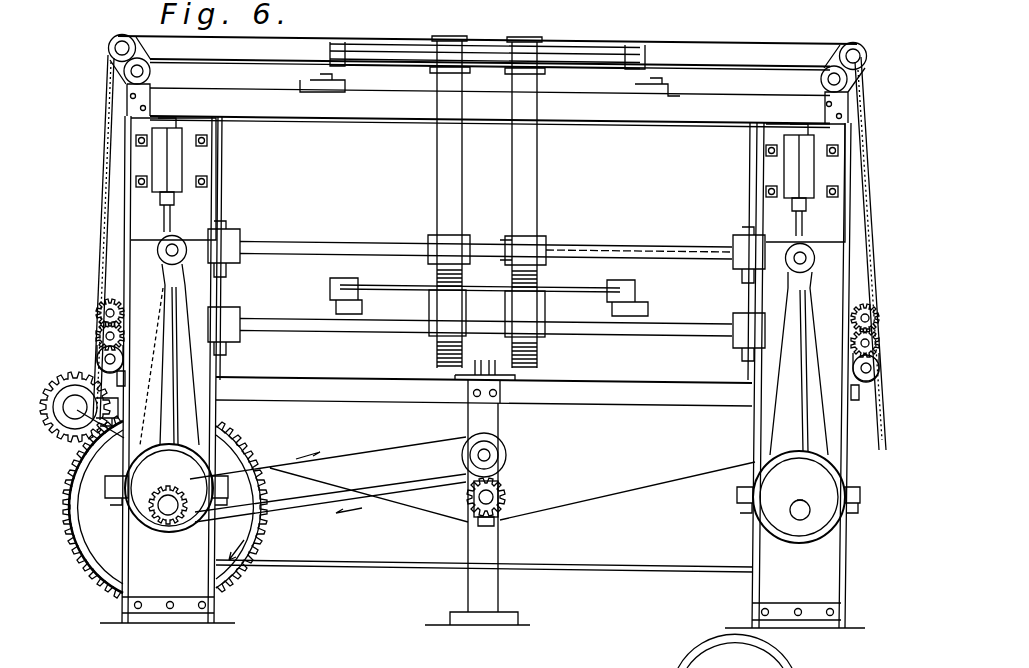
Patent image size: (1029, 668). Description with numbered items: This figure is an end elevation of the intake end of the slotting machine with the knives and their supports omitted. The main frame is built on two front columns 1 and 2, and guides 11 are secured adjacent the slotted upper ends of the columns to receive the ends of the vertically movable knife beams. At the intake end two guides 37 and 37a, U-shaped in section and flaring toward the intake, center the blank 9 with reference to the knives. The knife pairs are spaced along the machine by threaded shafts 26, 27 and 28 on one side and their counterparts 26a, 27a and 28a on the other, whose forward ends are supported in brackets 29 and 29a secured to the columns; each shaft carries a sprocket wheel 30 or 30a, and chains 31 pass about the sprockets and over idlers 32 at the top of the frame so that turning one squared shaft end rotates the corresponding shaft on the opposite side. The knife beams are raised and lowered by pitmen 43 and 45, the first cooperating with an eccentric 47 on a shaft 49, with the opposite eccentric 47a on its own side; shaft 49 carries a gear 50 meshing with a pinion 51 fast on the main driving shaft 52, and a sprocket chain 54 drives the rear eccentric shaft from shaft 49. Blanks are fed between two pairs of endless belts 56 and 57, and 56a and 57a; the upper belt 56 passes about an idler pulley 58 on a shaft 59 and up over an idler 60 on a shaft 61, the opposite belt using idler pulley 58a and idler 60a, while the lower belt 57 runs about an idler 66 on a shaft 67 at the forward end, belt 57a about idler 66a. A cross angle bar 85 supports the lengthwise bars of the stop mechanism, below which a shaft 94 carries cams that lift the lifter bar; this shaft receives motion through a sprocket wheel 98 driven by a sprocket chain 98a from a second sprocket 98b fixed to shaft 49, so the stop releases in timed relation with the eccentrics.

The front column 1 is at (168, 585).
The front column 2 is at (762, 588).
The blank 9 is at (577, 286).
The guides 11 is at (216, 190).
The shaft 26 is at (106, 310).
The shaft 26a is at (877, 302).
The shaft 27 is at (120, 330).
The shaft 27a is at (860, 346).
The shaft 28 is at (122, 358).
The shaft 28a is at (875, 373).
The bracket 29 is at (125, 378).
The bracket 29a is at (858, 400).
The sprocket wheel 30 is at (98, 336).
The sprocket wheel 30a is at (880, 356).
The chain 31 is at (102, 176).
The idler 32 is at (151, 70).
The guide 37 is at (335, 286).
The guide 37a is at (640, 294).
The pitman 43 is at (185, 362).
The pitman 45 is at (782, 420).
The eccentric 47 is at (139, 506).
The eccentric 47a is at (794, 522).
The shaft 49 is at (178, 516).
The gear 50 is at (252, 526).
The pinion 51 is at (70, 442).
The main driving shaft 52 is at (100, 456).
The sprocket chain 54 is at (380, 565).
The endless belt 56 is at (440, 135).
The endless belt 56a is at (523, 146).
The endless belt 57 is at (442, 325).
The endless belt 57a is at (545, 346).
The idler pulley 58 is at (437, 235).
The idler pulley 58a is at (537, 240).
The shaft 59 is at (617, 244).
The idler 60 is at (462, 38).
The idler 60a is at (537, 41).
The shaft 61 is at (585, 63).
The idler 66 is at (442, 343).
The idler 66a is at (540, 361).
The shaft 67 is at (680, 338).
The cross angle bar 85 is at (601, 406).
The shaft 94 is at (480, 452).
The sprocket wheel 98 is at (508, 458).
The sprocket chain 98a is at (360, 448).
The sprocket 98b is at (169, 488).